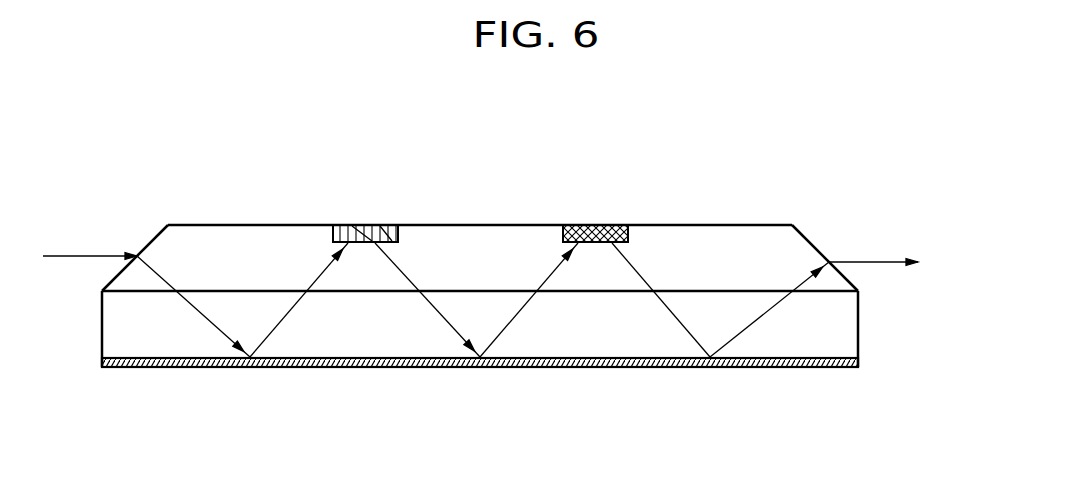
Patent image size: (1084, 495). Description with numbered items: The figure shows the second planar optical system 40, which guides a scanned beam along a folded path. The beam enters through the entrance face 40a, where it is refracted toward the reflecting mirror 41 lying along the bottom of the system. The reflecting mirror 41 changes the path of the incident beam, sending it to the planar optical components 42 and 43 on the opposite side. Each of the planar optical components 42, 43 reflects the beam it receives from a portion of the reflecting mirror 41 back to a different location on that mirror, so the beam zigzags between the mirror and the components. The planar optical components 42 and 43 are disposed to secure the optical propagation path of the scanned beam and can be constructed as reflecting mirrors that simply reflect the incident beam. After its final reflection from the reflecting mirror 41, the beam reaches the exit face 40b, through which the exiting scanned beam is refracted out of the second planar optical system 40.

The second planar optical system 40 is at (525, 288).
The entrance face 40a is at (152, 240).
The exit face 40b is at (843, 273).
The reflecting mirror 41 is at (148, 367).
The planar optical component 42 is at (388, 230).
The planar optical component 43 is at (620, 227).